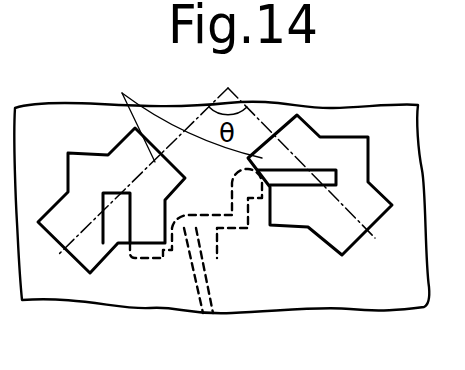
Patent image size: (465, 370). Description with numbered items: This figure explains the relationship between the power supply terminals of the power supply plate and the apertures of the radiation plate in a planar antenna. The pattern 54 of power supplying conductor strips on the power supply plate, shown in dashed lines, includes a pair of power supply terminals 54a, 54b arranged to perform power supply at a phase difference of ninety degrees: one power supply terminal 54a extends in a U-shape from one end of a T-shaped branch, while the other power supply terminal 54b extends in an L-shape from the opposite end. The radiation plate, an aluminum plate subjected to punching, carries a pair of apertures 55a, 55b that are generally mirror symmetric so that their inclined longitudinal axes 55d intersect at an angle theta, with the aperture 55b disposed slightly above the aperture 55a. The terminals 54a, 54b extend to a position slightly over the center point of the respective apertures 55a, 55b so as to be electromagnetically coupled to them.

The pattern of power supplying conductor strips 54 is at (215, 260).
The power supply terminal 54a is at (100, 238).
The power supply terminal 54b is at (340, 170).
The aperture 55a is at (85, 200).
The aperture 55b is at (302, 215).
The longitudinal axis 55d is at (179, 111).